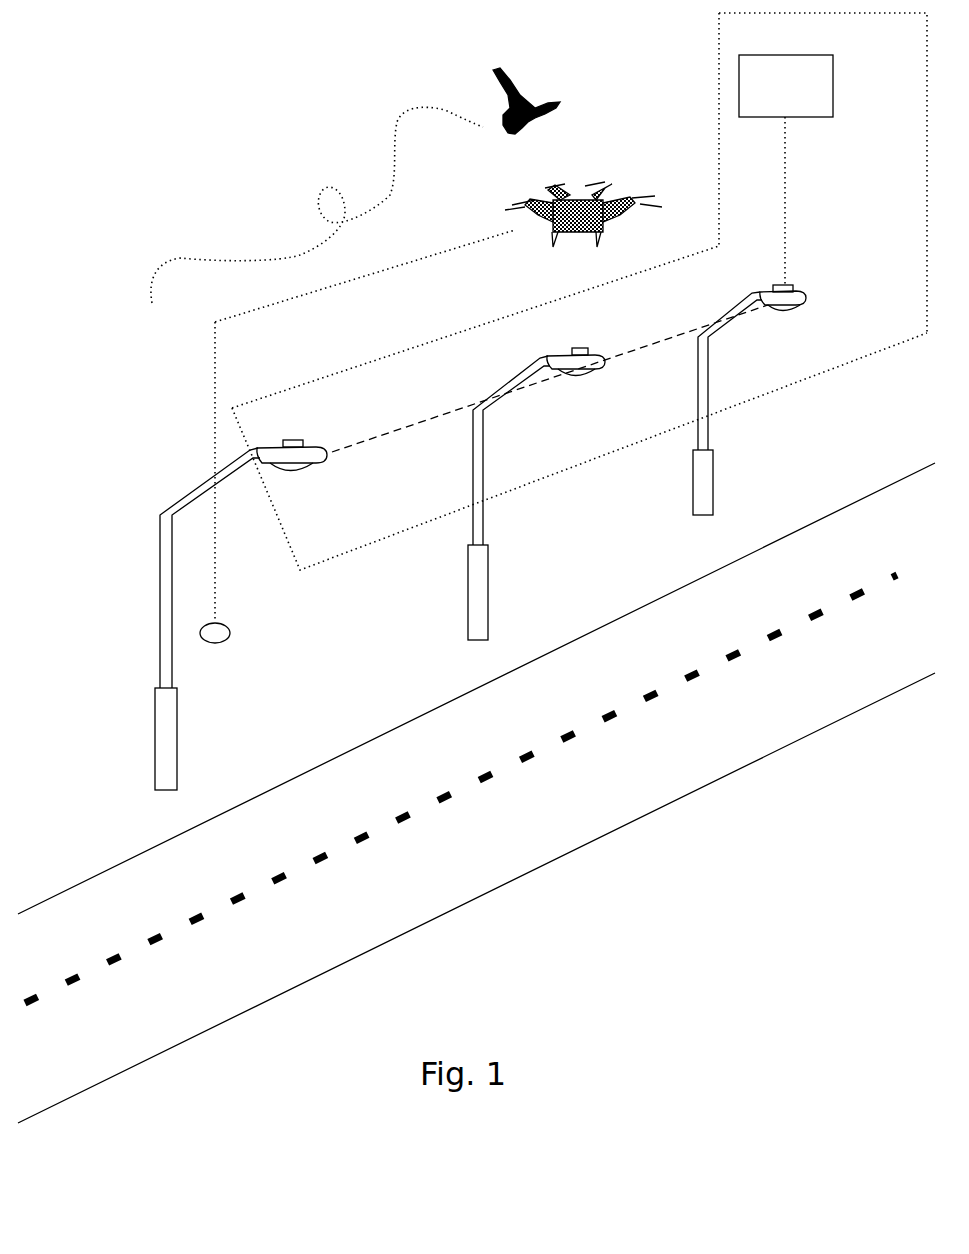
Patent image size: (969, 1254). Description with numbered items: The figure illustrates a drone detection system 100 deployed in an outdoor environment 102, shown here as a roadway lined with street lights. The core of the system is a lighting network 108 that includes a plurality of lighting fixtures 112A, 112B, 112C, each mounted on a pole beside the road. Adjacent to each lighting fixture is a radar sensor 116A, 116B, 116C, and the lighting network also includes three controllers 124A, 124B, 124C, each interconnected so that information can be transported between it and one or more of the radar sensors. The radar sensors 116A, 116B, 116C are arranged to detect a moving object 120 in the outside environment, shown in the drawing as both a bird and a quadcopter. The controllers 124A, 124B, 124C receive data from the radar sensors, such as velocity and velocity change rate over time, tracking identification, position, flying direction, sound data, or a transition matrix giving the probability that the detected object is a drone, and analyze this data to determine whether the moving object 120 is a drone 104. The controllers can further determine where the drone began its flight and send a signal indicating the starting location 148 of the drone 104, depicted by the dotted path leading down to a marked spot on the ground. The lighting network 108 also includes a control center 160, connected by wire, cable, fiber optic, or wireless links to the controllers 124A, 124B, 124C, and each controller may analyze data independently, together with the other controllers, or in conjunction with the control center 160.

The drone detection system 100 is at (256, 160).
The outdoor environment 102 is at (476, 793).
The drone 104 is at (603, 182).
The lighting network 108 is at (719, 38).
The lighting fixture 112A is at (284, 594).
The lighting fixture 112B is at (576, 474).
The lighting fixture 112C is at (799, 381).
The radar sensor 116A is at (348, 423).
The radar sensor 116B is at (628, 332).
The radar sensor 116C is at (839, 270).
The moving object 120 is at (534, 106).
The controller 124A is at (293, 440).
The controller 124B is at (583, 350).
The controller 124C is at (785, 288).
The starting location 148 is at (228, 624).
The control center 160 is at (786, 169).